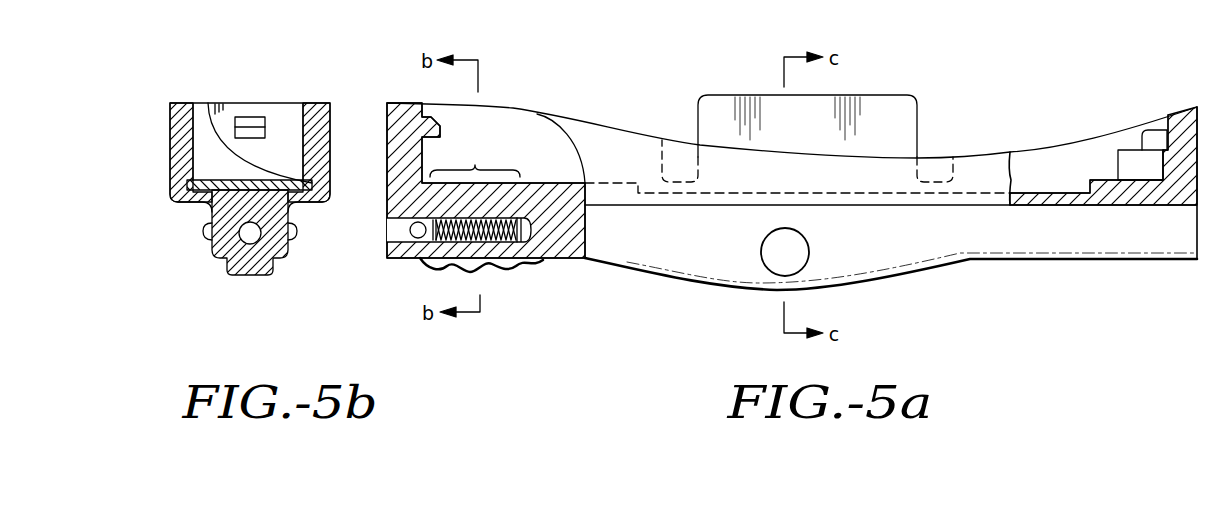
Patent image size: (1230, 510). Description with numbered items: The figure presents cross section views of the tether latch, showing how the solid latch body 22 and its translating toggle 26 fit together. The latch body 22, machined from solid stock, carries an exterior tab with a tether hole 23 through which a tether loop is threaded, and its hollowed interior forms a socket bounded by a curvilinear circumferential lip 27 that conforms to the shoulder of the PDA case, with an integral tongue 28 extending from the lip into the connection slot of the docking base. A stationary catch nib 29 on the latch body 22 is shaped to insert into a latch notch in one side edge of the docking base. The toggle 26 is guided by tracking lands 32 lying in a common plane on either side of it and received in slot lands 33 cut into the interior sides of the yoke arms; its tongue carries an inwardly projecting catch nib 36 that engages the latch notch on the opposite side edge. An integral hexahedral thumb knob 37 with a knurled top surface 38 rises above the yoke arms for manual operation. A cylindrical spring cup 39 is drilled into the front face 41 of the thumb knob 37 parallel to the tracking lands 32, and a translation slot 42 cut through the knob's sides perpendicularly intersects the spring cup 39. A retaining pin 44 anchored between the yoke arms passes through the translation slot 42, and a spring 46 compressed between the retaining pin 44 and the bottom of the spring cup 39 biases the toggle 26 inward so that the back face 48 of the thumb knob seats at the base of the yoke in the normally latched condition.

In FIG. 5A, the latch body 22 is at (1167, 259).
In FIG. 5A, the tether hole 23 is at (782, 262).
In FIG. 5B, the toggle 26 is at (387, 103).
In FIG. 5A, the toggle 26 is at (523, 272).
In FIG. 5A, the curvilinear circumferential lip 27 is at (513, 108).
In FIG. 5A, the integral tongue 28 is at (892, 95).
In FIG. 5B, the stationary catch nib 29 is at (309, 287).
In FIG. 5B, the tracking lands 32 is at (208, 103).
In FIG. 5B, the slot lands 33 is at (312, 184).
In FIG. 5B, the catch nib 36 is at (252, 117).
In FIG. 5B, the thumb knob 37 is at (266, 277).
In FIG. 5A, the thumb knob 37 is at (408, 258).
In FIG. 5A, the knurled top surface 38 is at (388, 245).
In FIG. 5A, the cylindrical spring cup 39 is at (497, 215).
In FIG. 5A, the front face 41 is at (387, 212).
In FIG. 5B, the translation slot 42 is at (271, 277).
In FIG. 5A, the translation slot 42 is at (475, 157).
In FIG. 5A, the retaining pin 44 is at (386, 262).
In FIG. 5A, the spring 46 is at (527, 233).
In FIG. 5A, the back face 48 is at (557, 240).